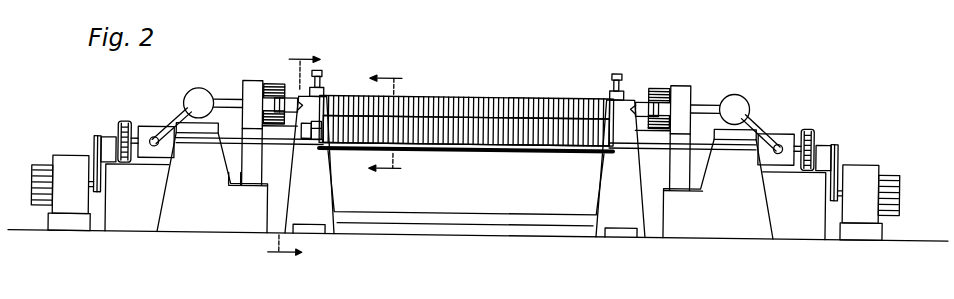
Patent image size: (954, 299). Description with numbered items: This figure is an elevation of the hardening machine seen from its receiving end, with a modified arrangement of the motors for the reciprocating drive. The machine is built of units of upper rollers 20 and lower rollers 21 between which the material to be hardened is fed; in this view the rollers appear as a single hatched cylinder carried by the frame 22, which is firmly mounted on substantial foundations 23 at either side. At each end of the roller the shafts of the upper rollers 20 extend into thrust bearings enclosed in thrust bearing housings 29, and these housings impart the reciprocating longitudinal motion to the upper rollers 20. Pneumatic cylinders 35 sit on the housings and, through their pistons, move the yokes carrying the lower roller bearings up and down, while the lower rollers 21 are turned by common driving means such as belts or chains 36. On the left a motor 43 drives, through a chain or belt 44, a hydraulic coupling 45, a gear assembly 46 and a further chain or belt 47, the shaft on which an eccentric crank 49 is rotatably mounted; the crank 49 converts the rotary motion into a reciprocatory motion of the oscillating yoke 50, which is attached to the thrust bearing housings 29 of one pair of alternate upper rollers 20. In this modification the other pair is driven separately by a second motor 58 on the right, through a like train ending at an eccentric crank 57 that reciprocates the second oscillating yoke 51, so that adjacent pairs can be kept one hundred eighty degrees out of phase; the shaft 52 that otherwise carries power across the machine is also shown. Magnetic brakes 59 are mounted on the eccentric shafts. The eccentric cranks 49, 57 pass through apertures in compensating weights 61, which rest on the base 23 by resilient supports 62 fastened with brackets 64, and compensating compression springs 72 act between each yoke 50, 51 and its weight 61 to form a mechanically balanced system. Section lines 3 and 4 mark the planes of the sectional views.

The section line 3- 3 is at (286, 158).
The section line 4- 4 is at (395, 123).
The upper rollers 20 is at (527, 95).
The lower rollers 21 is at (496, 134).
The frame 22 is at (604, 150).
The foundations 23 is at (217, 214).
The thrust bearing housings 29 is at (284, 146).
The pneumatic cylinders 35 is at (320, 70).
The belts or chains 36 is at (305, 137).
The motor 43 is at (67, 162).
The chain or belt 44 is at (95, 145).
The hydraulic coupling 45 is at (118, 126).
The gear assembly 46 is at (160, 153).
The chain or belt 47 is at (177, 116).
The eccentric crank 49 is at (211, 96).
The oscillating yoke 50 is at (267, 83).
The oscillating yoke 51 is at (652, 85).
The shaft 52 is at (556, 148).
The eccentric crank 57 is at (714, 100).
The second motor 58 is at (866, 158).
The magnetic brake 59 is at (197, 110).
The compensating weights 61 is at (241, 88).
The resilient supports 62 is at (262, 175).
The brackets 64 is at (228, 178).
The compensating compression springs 72 is at (276, 142).